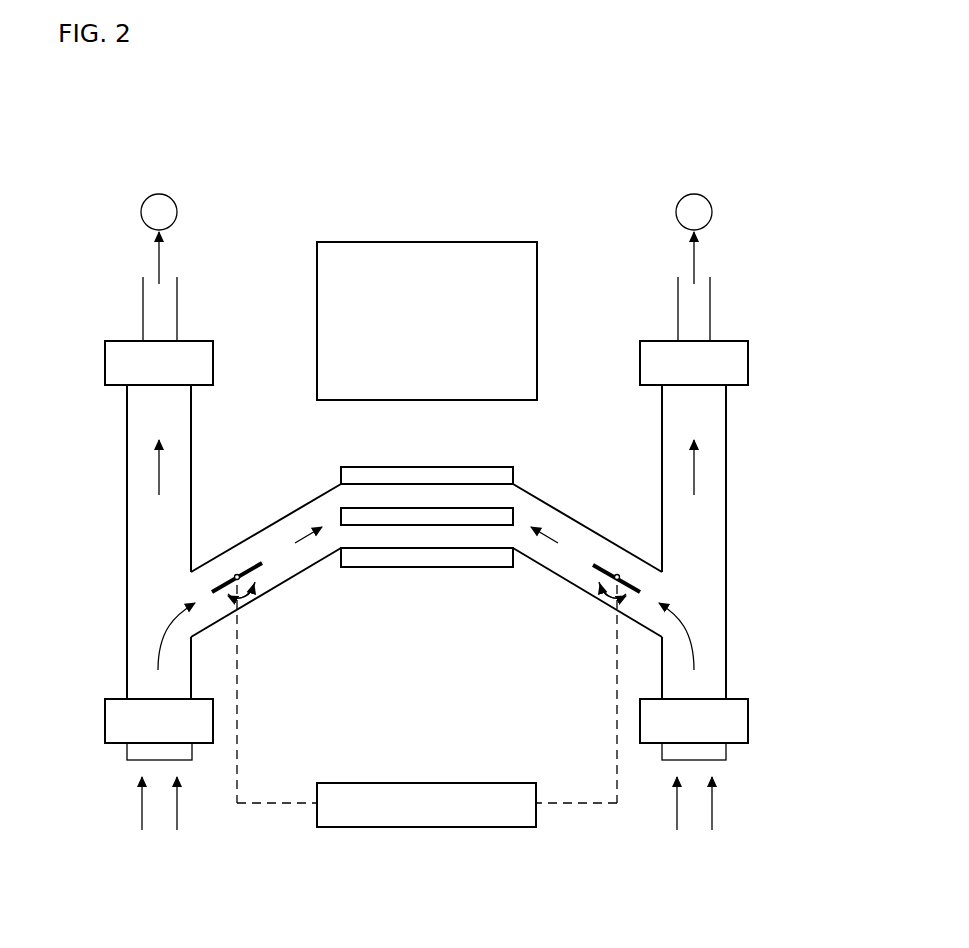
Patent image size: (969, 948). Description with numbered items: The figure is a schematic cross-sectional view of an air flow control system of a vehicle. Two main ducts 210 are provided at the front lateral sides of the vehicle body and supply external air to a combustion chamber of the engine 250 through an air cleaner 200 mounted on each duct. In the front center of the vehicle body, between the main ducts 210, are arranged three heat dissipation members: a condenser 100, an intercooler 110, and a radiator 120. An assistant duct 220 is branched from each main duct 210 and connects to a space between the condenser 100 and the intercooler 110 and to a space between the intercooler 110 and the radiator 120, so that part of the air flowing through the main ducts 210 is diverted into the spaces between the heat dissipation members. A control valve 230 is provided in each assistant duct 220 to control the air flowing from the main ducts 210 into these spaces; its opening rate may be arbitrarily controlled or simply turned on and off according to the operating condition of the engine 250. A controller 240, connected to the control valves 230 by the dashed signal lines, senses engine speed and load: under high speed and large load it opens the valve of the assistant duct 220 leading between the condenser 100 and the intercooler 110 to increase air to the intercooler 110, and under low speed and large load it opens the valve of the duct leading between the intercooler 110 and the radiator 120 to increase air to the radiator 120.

The condenser 100 is at (359, 569).
The intercooler 110 is at (418, 526).
The radiator 120 is at (467, 485).
The air cleaner 200 is at (212, 339).
The main ducts 210 is at (127, 546).
The assistant ducts 220 is at (270, 595).
The control valves 230 is at (237, 568).
The controller 240 is at (367, 829).
The engine 250 is at (445, 241).